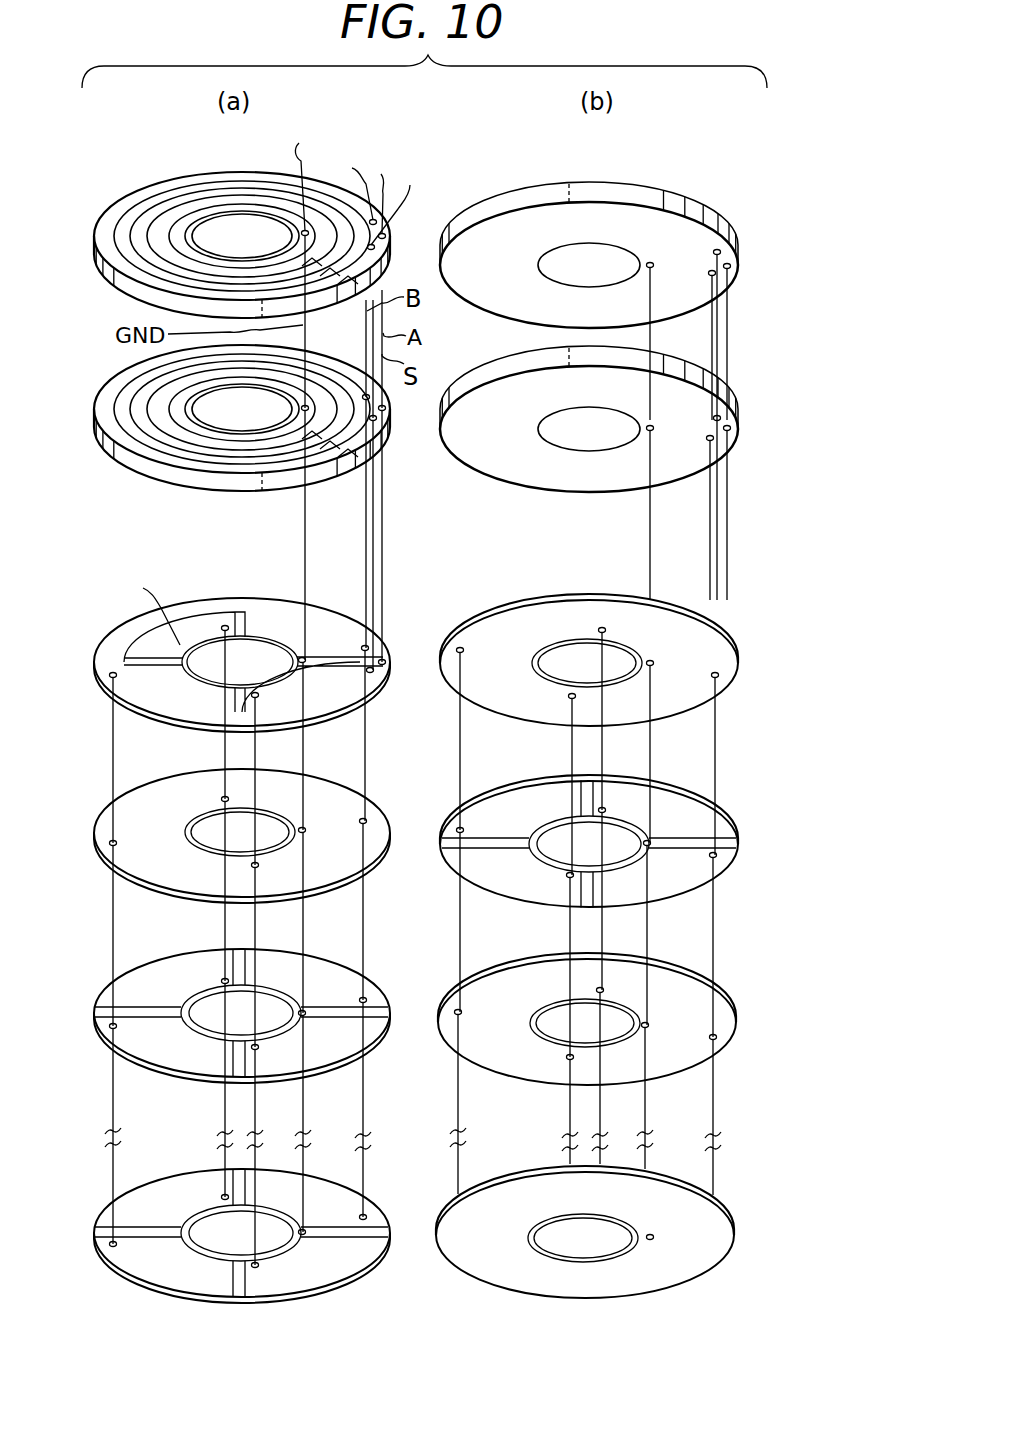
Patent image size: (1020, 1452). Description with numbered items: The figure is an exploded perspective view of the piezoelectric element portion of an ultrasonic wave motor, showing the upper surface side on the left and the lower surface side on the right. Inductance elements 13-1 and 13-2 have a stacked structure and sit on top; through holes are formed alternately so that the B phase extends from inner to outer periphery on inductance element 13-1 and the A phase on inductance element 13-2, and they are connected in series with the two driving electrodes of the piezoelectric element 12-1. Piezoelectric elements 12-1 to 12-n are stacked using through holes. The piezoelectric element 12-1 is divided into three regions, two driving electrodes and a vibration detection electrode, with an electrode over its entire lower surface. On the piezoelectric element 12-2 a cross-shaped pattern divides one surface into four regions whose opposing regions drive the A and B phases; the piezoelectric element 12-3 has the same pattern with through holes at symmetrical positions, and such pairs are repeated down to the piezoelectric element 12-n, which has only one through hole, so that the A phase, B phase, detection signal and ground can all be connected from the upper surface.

The inductance element 13-1 is at (802, 148).
The inductance element 13-2 is at (802, 348).
The piezoelectric element 12-1 is at (802, 572).
The piezoelectric element 12-2 is at (802, 752).
The piezoelectric element 12-3 is at (802, 932).
The piezoelectric element 12-n is at (802, 1165).